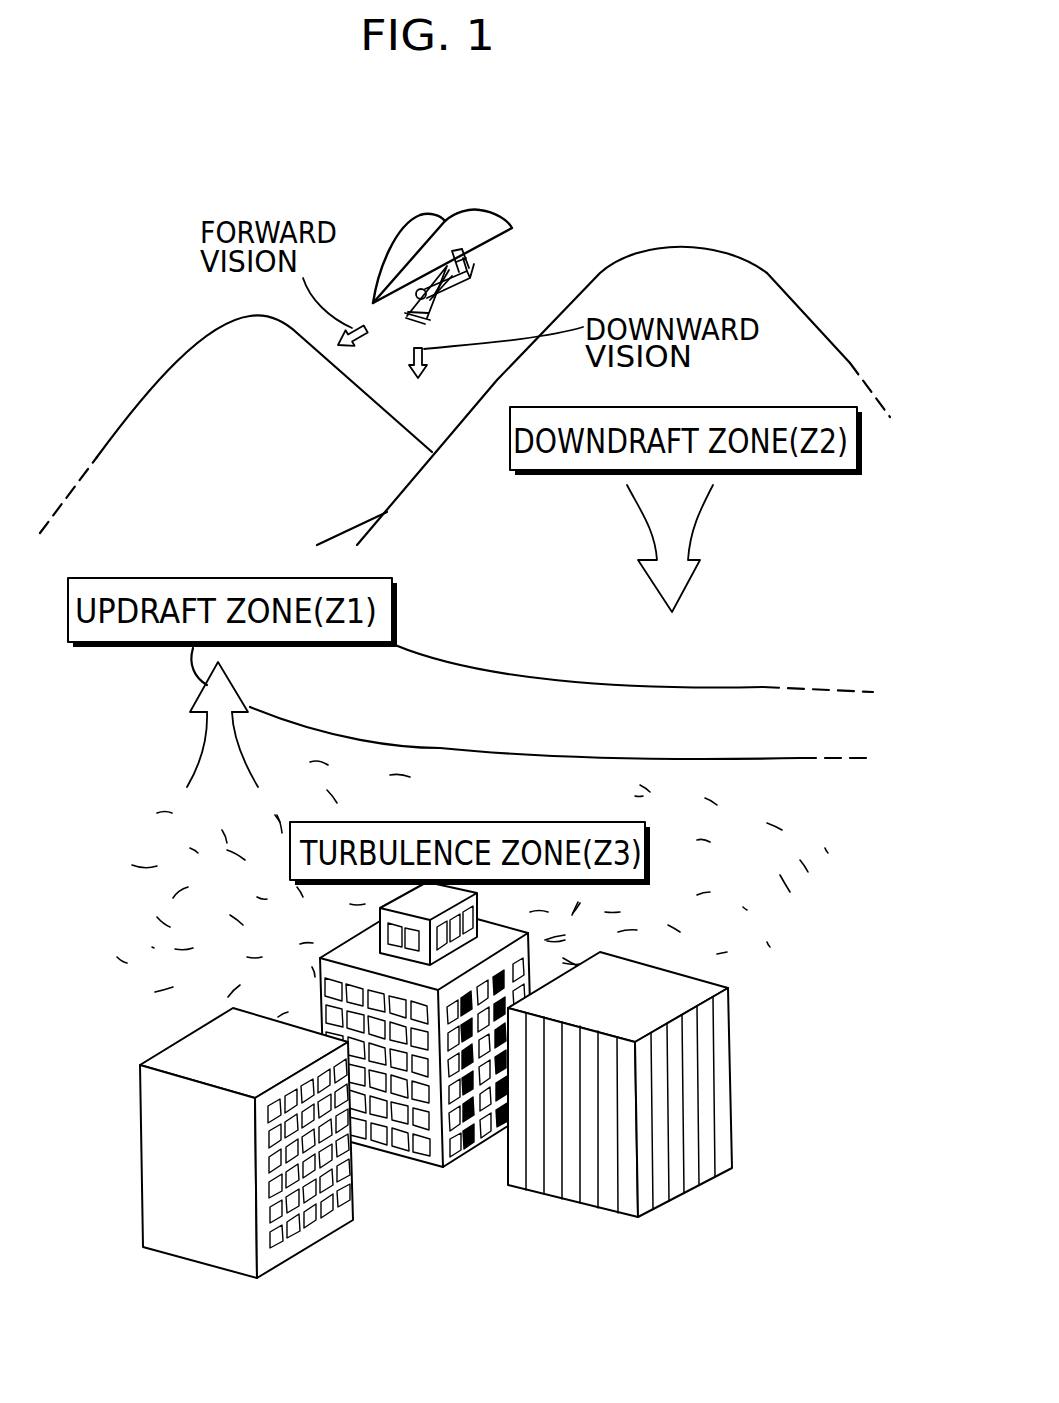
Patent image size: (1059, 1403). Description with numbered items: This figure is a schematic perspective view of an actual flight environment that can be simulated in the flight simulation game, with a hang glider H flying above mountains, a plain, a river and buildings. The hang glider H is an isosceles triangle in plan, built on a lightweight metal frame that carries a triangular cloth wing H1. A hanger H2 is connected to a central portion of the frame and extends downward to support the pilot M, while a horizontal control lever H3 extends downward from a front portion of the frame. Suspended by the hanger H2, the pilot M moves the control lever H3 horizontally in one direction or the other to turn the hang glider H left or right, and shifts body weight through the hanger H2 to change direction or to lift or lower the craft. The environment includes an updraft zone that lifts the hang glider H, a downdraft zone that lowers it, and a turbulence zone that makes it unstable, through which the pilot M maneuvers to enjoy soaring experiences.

The hang glider H is at (443, 213).
The triangular wing H1 is at (400, 247).
The hanger H2 is at (468, 262).
The horizontal control lever H3 is at (403, 302).
The pilot M is at (437, 298).